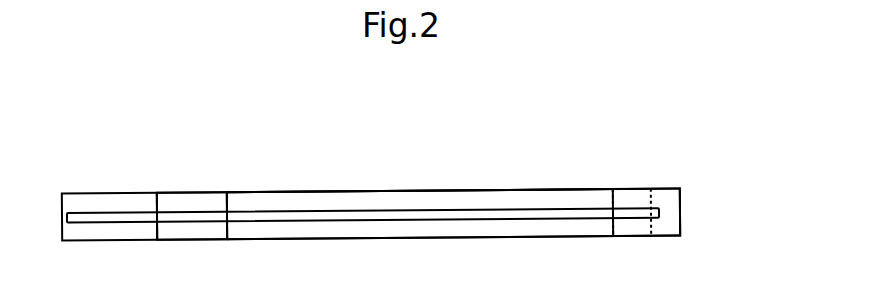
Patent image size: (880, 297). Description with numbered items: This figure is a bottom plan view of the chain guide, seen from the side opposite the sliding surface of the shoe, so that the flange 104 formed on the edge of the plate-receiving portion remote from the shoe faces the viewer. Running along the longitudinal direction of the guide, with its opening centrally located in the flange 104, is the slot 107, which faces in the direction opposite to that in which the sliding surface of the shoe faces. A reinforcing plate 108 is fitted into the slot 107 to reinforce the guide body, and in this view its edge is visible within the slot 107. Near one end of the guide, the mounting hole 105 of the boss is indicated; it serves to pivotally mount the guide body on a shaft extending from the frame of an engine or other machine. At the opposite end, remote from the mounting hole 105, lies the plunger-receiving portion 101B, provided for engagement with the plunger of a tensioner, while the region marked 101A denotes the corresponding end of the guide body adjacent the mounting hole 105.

The first end portion of substrate 101A is at (618, 188).
The plunger-receiving portion 101B is at (178, 186).
The flange 104 is at (359, 198).
The mounting hole 105 is at (638, 227).
The slot 107 is at (475, 215).
The reinforcing plate 108 is at (443, 198).